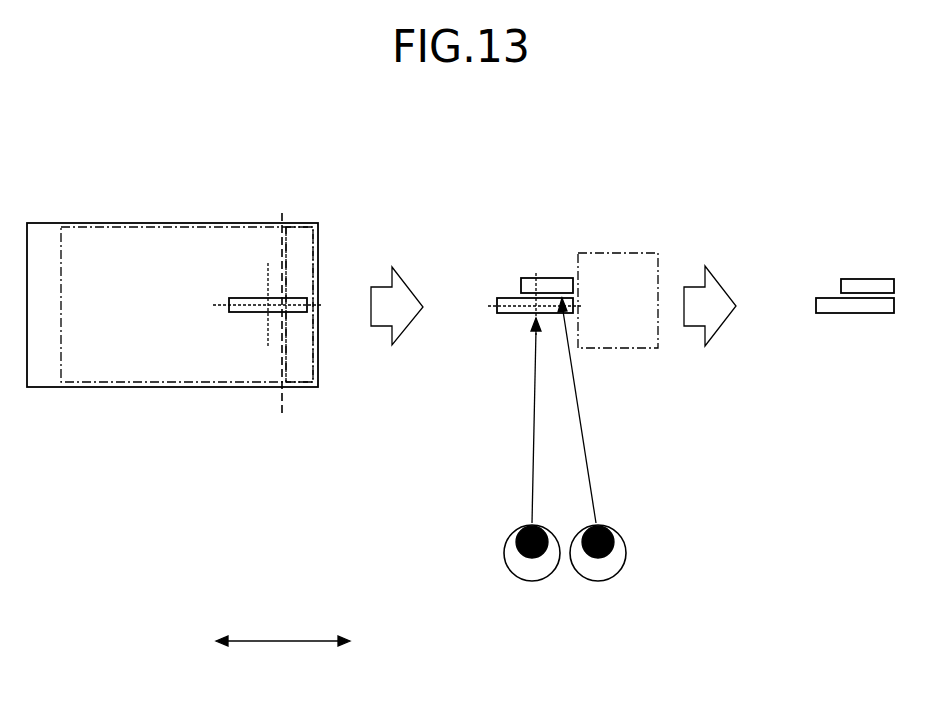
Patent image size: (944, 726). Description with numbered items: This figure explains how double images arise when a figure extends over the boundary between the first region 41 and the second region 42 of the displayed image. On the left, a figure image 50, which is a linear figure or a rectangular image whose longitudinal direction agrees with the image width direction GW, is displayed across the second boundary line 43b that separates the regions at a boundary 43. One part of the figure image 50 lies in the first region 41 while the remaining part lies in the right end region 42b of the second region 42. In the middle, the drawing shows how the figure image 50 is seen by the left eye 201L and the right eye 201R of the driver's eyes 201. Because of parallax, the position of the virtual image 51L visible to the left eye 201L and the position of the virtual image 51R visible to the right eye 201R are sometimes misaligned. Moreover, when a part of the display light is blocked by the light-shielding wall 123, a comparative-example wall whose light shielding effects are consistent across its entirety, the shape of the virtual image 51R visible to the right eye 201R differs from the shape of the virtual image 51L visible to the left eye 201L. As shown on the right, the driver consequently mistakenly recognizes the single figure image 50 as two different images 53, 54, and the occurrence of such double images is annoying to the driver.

The first region 41 is at (247, 233).
The second boundary line 43b is at (283, 211).
The boundary 43 is at (298, 261).
The right end region 42b is at (299, 263).
The second region 42 is at (346, 283).
The figure image 50 is at (238, 297).
The virtual image visible to the left eye 51L is at (507, 297).
The virtual image visible to the right eye 51R is at (560, 277).
The light-shielding wall 123 is at (637, 253).
The image 53 is at (829, 297).
The image 54 is at (878, 278).
The left eye 201L is at (523, 582).
The right eye 201R is at (596, 470).
The eyes of observer 201 is at (571, 492).
The image width direction GW is at (283, 629).